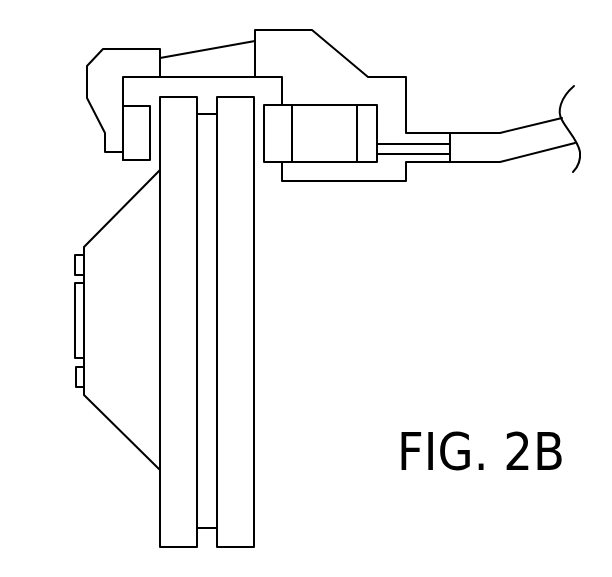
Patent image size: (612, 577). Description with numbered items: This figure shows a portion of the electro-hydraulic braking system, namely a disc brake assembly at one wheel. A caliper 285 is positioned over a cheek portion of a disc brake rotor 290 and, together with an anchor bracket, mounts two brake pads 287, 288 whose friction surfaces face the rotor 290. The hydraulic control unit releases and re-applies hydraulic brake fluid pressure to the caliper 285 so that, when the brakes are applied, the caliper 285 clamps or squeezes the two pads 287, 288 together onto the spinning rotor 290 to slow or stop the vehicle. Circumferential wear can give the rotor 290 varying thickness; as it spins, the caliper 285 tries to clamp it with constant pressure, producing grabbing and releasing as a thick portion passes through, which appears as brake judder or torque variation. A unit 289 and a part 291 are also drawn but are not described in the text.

The caliper 285 is at (87, 98).
The brake pad 287 is at (132, 163).
The brake pad 288 is at (263, 163).
The sensor module 289 is at (345, 144).
The disc brake rotor 290 is at (254, 303).
The base 291 is at (115, 427).